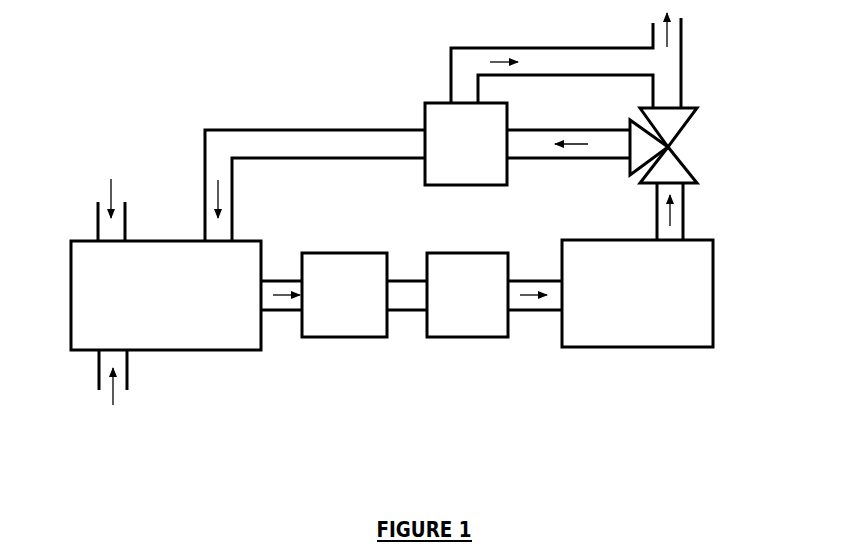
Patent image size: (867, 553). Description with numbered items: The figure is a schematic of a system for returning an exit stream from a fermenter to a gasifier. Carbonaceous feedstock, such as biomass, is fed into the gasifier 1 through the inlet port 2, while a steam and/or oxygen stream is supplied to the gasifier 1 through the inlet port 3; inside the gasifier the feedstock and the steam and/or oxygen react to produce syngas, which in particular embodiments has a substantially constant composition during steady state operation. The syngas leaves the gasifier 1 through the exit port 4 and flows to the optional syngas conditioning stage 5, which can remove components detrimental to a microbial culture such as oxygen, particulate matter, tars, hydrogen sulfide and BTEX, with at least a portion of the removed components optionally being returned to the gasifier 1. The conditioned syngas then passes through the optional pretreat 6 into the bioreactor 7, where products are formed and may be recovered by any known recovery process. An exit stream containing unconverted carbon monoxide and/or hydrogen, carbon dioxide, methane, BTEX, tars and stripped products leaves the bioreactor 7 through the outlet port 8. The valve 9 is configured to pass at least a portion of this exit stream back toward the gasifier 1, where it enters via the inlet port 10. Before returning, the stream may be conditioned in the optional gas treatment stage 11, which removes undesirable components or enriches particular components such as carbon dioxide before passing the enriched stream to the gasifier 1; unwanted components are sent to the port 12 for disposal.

The gasifier 1 is at (193, 350).
The inlet port 2 is at (125, 227).
The inlet port 3 is at (127, 390).
The exit port 4 is at (290, 303).
The syngas conditioning stage 5 is at (330, 337).
The pretreat 6 is at (467, 337).
The bioreactor 7 is at (630, 347).
The outlet port 8 is at (670, 212).
The valve 9 is at (687, 165).
The inlet port 10 is at (232, 210).
The gas treatment stage 11 is at (438, 103).
The port 12 is at (670, 32).